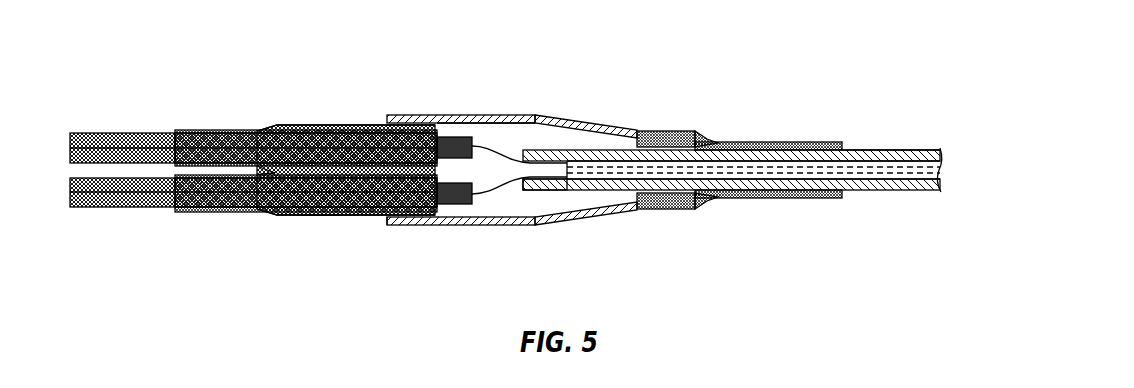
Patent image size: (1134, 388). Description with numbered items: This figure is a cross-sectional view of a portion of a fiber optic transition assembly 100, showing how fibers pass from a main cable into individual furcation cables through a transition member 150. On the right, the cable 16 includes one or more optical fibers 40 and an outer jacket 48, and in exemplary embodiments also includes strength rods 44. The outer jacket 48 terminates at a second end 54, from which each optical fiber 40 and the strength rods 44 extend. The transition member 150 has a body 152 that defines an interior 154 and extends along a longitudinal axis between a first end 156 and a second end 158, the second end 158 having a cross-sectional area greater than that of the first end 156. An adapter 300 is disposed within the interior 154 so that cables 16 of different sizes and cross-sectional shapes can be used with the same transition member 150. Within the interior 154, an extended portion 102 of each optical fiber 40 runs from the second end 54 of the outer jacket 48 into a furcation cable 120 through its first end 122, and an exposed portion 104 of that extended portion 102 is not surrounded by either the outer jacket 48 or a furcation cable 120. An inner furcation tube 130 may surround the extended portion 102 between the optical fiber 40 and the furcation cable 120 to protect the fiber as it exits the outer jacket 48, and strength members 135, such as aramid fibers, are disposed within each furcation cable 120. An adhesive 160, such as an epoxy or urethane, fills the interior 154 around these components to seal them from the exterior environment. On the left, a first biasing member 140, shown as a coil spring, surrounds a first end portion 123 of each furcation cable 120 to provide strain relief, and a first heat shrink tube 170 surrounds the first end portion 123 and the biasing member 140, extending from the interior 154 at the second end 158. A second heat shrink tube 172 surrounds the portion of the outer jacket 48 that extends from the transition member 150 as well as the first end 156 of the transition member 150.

The fiber optic transition assembly 100 is at (637, 45).
The furcation cable 120 is at (110, 128).
The inner furcation tube 130 is at (198, 136).
The extended portion 102 is at (223, 130).
The first heat shrink tube 170 is at (304, 124).
The first biasing member 140 is at (323, 124).
The first end portion 123 is at (316, 218).
The strength members 135 is at (447, 139).
The adhesive 160 is at (493, 143).
The transition member 150 is at (511, 108).
The body 152 is at (478, 226).
The first end 122 is at (404, 224).
The second end 158 is at (372, 224).
The adapter 300 is at (665, 200).
The first end 156 is at (713, 142).
The second heat shrink tube 172 is at (777, 145).
The exposed portion 104 is at (505, 155).
The strength rods 44 is at (917, 157).
The interior 154 is at (531, 203).
The second end 54 is at (560, 197).
The optical fiber 40 is at (858, 176).
The outer jacket 48 is at (872, 148).
The cable 16 is at (900, 135).